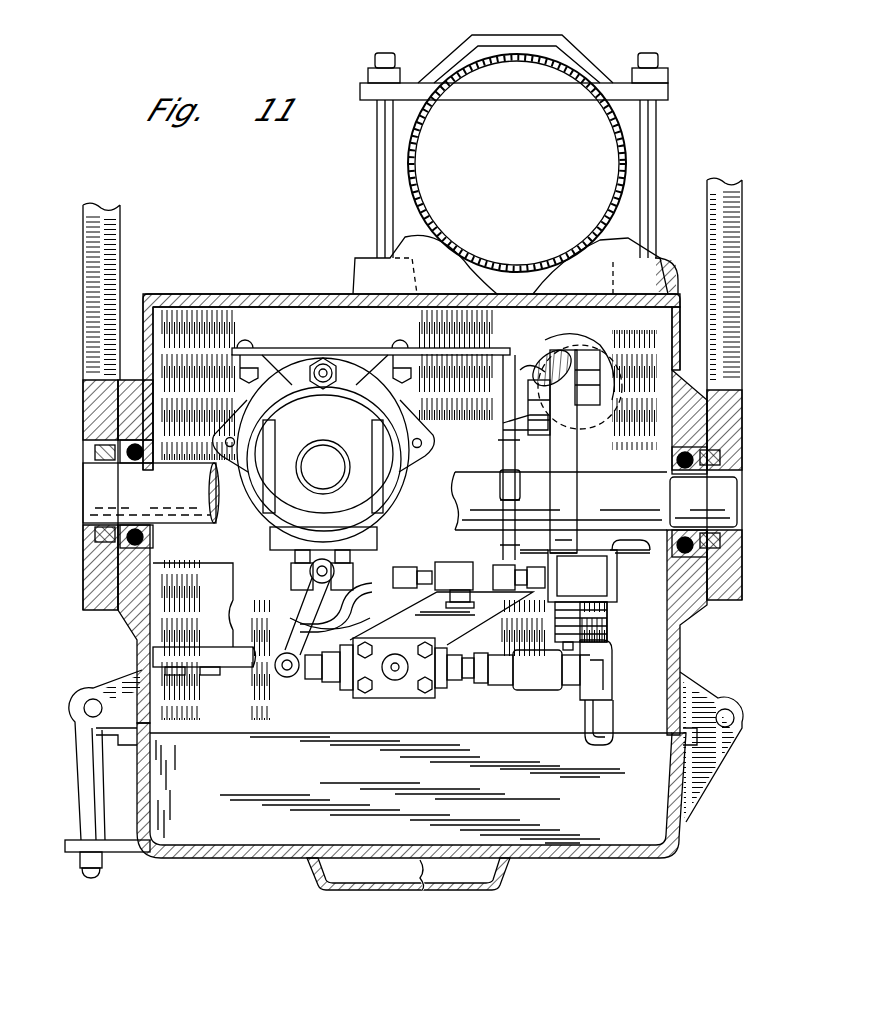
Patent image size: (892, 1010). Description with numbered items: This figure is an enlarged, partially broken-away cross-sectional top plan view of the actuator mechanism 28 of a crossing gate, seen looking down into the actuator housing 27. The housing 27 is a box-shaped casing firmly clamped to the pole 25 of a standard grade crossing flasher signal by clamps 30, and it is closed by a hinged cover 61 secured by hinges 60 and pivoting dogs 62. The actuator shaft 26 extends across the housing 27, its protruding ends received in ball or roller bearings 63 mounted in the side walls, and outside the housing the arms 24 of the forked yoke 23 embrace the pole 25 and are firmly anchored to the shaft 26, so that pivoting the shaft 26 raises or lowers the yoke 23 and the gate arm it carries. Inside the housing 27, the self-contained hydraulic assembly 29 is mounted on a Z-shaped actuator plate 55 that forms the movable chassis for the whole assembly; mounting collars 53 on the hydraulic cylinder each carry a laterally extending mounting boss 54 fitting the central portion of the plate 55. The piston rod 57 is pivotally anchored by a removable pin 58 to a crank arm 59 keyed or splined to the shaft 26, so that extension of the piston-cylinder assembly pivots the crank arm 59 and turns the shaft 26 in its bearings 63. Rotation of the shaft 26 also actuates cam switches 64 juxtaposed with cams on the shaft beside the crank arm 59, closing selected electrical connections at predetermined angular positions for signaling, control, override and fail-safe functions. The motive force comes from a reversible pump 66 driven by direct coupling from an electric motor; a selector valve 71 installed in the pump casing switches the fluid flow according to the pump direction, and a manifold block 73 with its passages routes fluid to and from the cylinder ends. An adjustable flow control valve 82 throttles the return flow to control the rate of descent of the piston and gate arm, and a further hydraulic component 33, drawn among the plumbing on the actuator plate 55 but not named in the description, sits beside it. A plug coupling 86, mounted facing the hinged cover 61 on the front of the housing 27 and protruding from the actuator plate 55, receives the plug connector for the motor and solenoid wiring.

The forked yoke 23 is at (750, 240).
The arms 24 is at (92, 288).
The pole 25 is at (625, 133).
The shaft 26 is at (178, 462).
The actuator housing 27 is at (238, 288).
The actuator mechanism 28 is at (268, 822).
The self-contained hydraulic assembly 29 is at (465, 668).
The clamps 30 is at (583, 62).
The valve block 33 is at (395, 696).
The mounting collars 53 is at (558, 338).
The mounting boss 54 is at (520, 365).
The Z-shaped actuator plate 55 is at (352, 348).
The piston rod 57 is at (608, 365).
The removable pin 58 is at (606, 391).
The crank arm 59 is at (568, 455).
The hinges 60 is at (735, 722).
The hinged cover 61 is at (575, 862).
The pivoting dogs 62 is at (85, 772).
The ball or roller bearings 63 is at (118, 548).
The cam switches 64 is at (190, 678).
The pump 66 is at (262, 522).
The selector valve 71 is at (382, 540).
The manifold block 73 is at (487, 575).
The adjustable flow control valve 82 is at (503, 688).
The plug coupling 86 is at (610, 630).